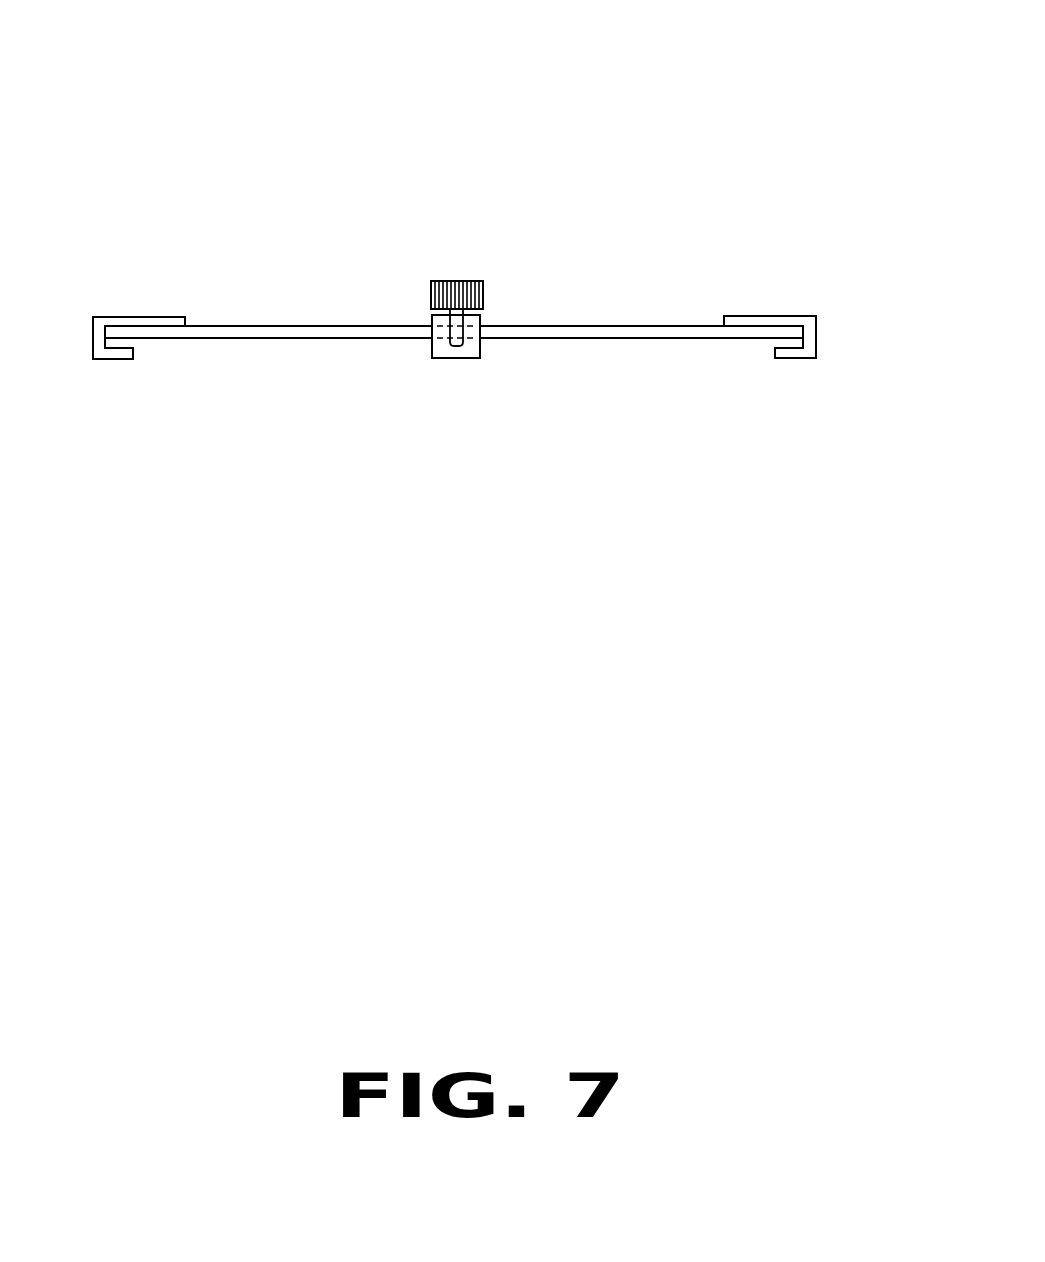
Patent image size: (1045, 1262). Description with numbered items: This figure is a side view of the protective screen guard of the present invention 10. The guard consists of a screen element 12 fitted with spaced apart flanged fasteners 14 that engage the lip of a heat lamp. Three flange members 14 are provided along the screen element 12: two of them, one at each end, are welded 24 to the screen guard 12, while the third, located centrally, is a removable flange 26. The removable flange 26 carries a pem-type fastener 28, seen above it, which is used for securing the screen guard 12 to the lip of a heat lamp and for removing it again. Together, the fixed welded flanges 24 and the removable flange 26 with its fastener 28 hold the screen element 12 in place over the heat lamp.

The protective screen guard 10 is at (582, 207).
The screen element 12 is at (288, 327).
The flanged fastener 14 is at (133, 315).
The weld 24 is at (152, 325).
The removable flange 26 is at (452, 358).
The pem-type fastener 28 is at (453, 280).